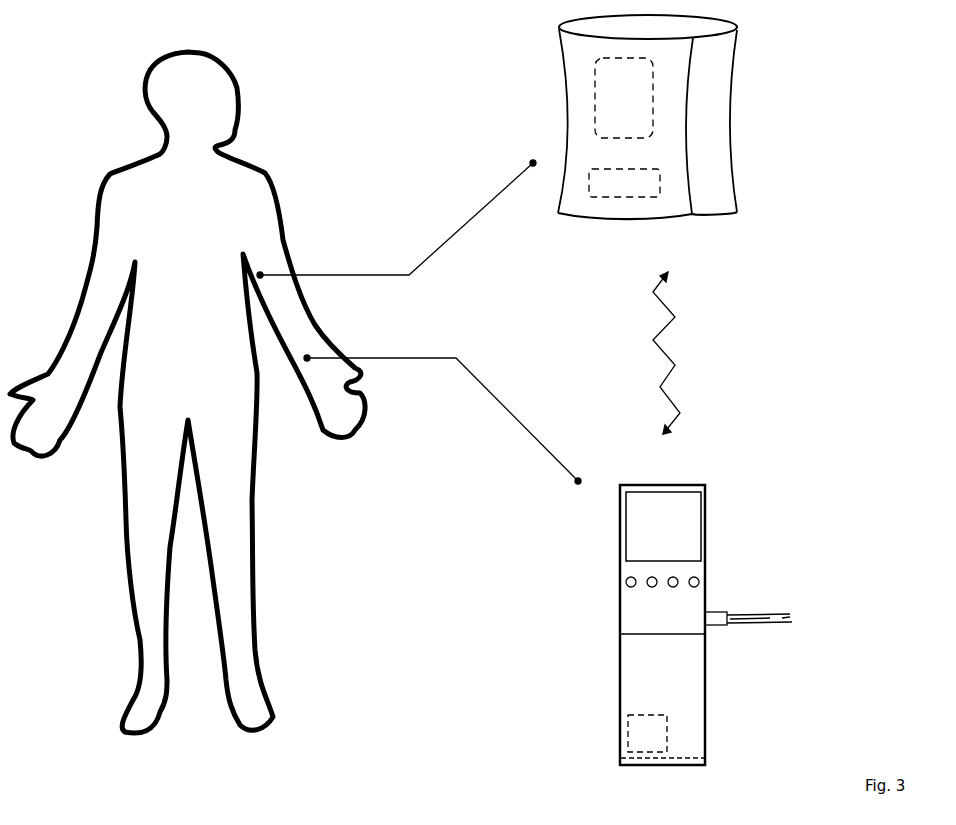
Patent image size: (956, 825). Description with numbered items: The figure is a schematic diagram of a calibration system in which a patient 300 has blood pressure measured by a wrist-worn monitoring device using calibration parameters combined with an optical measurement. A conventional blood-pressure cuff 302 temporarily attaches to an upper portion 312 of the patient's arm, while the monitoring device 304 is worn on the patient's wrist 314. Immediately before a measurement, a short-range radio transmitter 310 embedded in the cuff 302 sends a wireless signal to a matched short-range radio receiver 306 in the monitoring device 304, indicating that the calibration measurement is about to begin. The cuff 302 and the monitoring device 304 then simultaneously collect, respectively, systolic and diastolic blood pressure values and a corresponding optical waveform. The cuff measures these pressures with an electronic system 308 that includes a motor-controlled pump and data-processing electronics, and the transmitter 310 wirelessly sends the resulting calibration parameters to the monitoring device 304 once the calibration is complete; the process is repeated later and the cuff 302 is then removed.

The patient 300 is at (125, 588).
The blood-pressure cuff 302 is at (727, 118).
The monitoring device 304 is at (708, 700).
The short-range radio receiver 306 is at (645, 715).
The electronic system 308 is at (624, 98).
The short-range radio transmitter 310 is at (624, 183).
The upper portion of the patient's arm 312 is at (282, 258).
The patient's wrist 314 is at (318, 346).